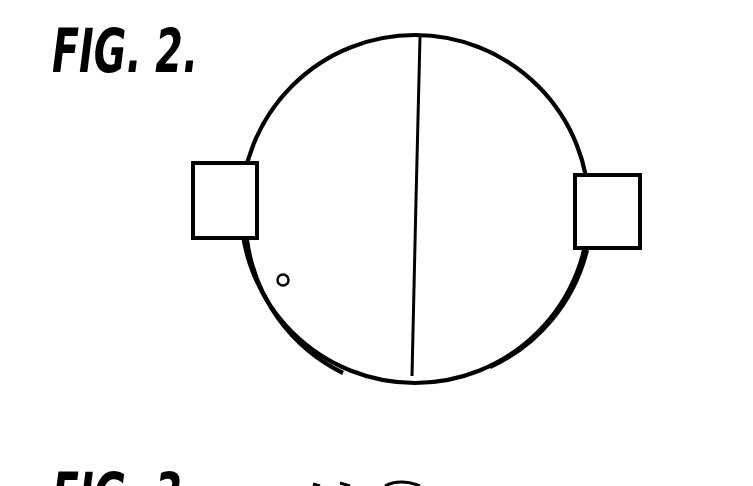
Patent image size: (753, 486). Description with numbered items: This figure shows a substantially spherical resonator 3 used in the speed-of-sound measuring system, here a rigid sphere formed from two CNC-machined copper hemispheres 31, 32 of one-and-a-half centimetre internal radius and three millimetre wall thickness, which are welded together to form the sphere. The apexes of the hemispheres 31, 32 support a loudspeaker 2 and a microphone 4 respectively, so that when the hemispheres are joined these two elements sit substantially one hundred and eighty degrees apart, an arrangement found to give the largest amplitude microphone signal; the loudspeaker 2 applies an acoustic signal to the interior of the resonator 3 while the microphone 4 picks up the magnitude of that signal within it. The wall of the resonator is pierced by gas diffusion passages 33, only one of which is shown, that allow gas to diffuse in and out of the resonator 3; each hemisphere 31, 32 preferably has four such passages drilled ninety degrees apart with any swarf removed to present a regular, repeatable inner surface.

The resonator 3 is at (499, 43).
The loudspeaker 2 is at (200, 187).
The microphone 4 is at (625, 211).
The gas diffusion passages 33 is at (277, 282).
The hemisphere 31 is at (318, 354).
The hemisphere 32 is at (495, 358).